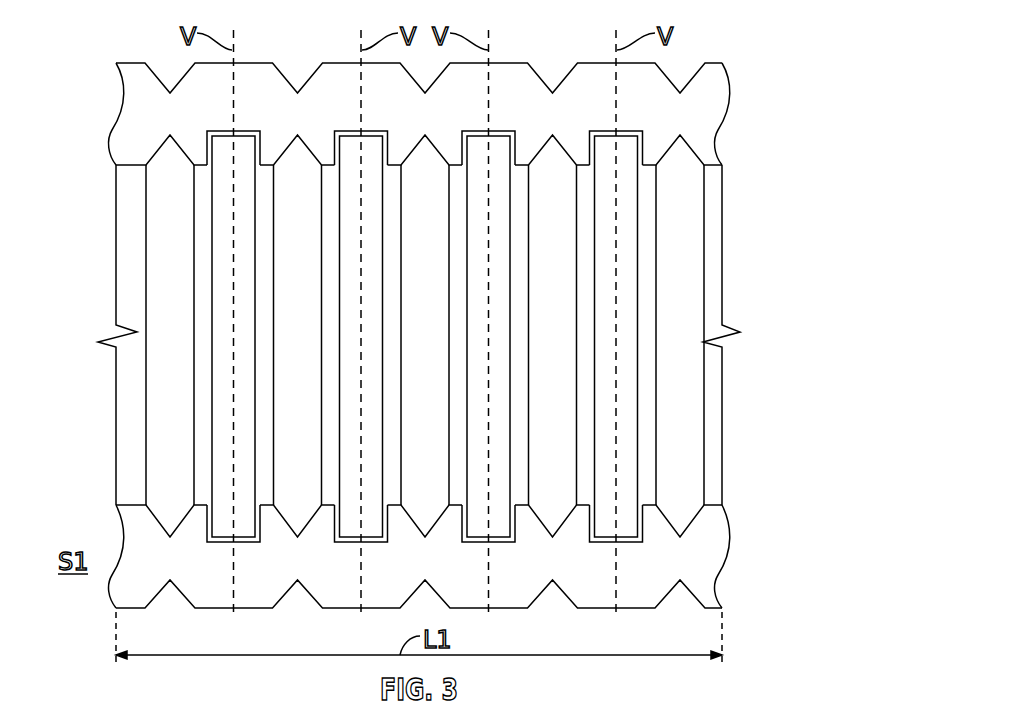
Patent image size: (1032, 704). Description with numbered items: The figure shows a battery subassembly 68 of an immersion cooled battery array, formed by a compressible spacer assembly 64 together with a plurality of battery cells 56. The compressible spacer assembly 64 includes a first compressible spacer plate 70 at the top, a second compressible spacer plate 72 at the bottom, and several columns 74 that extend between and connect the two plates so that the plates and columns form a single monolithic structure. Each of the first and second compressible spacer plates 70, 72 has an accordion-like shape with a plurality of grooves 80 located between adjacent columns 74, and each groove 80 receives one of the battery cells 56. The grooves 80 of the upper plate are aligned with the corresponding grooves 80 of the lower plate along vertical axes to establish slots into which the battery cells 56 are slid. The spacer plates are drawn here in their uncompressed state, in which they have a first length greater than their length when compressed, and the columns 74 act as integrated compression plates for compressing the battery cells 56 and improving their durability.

The battery cells 56 is at (348, 300).
The compressible spacer assembly 64 is at (727, 117).
The battery subassembly 68 is at (427, 304).
The first compressible spacer plate 70 is at (710, 82).
The second compressible spacer plate 72 is at (692, 557).
The columns 74 is at (420, 377).
The grooves 80 is at (345, 131).